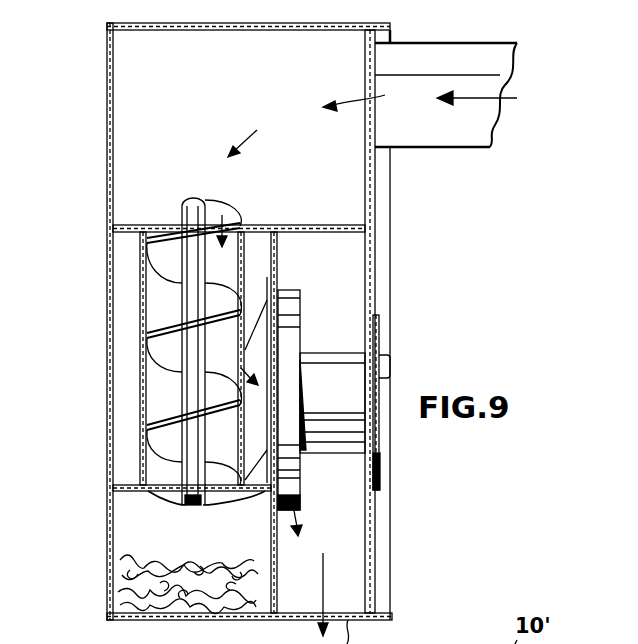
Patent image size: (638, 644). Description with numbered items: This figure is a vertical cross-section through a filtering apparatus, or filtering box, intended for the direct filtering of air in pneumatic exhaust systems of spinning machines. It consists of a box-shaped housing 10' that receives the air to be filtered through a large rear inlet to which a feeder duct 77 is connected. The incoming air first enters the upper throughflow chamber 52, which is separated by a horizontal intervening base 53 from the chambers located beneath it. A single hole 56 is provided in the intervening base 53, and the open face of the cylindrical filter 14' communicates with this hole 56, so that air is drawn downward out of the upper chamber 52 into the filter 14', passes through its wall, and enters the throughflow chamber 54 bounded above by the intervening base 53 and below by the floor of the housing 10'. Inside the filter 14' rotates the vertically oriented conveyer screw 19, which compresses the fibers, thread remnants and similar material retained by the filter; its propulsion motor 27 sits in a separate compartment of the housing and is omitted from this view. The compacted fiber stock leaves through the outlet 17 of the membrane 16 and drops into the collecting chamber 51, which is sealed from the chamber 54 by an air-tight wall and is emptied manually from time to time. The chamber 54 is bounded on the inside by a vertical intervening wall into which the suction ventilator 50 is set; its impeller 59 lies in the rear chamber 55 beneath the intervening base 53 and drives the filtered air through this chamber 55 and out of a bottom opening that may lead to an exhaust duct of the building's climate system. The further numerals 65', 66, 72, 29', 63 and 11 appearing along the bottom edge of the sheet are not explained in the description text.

The box-shaped housing 10' is at (206, 321).
The upper throughflow chamber 52 is at (135, 62).
The feeder duct 77 is at (505, 58).
The intervening base 53 is at (308, 225).
The hole 56 is at (228, 222).
The throughflow chamber 54 is at (128, 278).
The cylindrical filter 14' is at (99, 358).
The conveyer screw 19 is at (158, 322).
The membrane 16 is at (160, 491).
The outlet 17 is at (200, 502).
The collecting chamber 51 is at (125, 550).
The impeller 59 is at (298, 318).
The ventilator 50 is at (398, 369).
The rear chamber 55 is at (350, 524).
The lower element 65' is at (438, 631).
The lower element 66 is at (124, 640).
The lower element 72 is at (74, 640).
The lower element 29' is at (286, 640).
The lower element 63 is at (349, 640).
The propulsion motor 27 is at (16, 640).
The lower element 11 is at (189, 640).